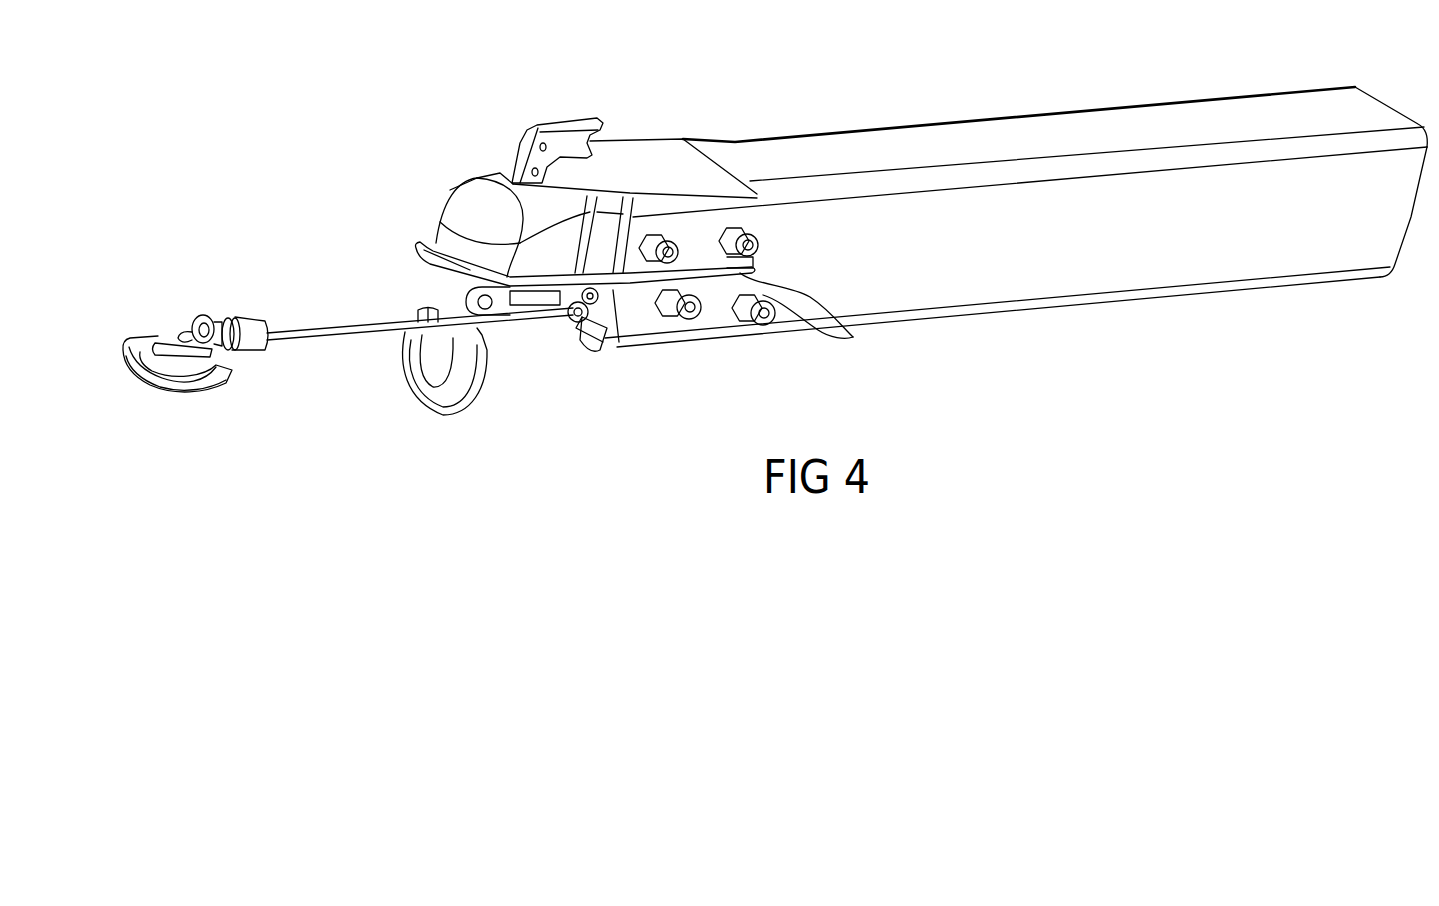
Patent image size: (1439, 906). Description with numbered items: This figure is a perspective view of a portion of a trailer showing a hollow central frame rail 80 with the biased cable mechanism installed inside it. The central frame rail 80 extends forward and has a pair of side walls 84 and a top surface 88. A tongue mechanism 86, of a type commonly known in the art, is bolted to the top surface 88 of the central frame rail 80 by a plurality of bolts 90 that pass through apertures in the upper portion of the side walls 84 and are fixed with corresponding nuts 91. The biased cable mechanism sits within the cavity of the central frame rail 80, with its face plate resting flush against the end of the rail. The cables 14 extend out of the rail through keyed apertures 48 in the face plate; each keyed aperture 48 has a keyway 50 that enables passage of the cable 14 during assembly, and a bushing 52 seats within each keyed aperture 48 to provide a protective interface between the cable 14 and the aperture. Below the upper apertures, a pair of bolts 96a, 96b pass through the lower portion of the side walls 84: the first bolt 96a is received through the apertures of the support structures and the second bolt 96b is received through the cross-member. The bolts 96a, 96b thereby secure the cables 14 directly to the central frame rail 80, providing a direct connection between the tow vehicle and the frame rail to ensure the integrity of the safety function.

The cable 14 is at (302, 341).
The keyed aperture 48 is at (567, 323).
The keyway 50 is at (607, 345).
The bushing 52 is at (576, 325).
The central frame rail 80 is at (1016, 187).
The side wall 84 is at (1190, 265).
The tongue mechanism 86 is at (638, 157).
The top surface 88 is at (927, 148).
The bolt 90 is at (680, 252).
The nut 91 is at (853, 337).
The first bolt 96a is at (777, 327).
The second bolt 96b is at (693, 322).